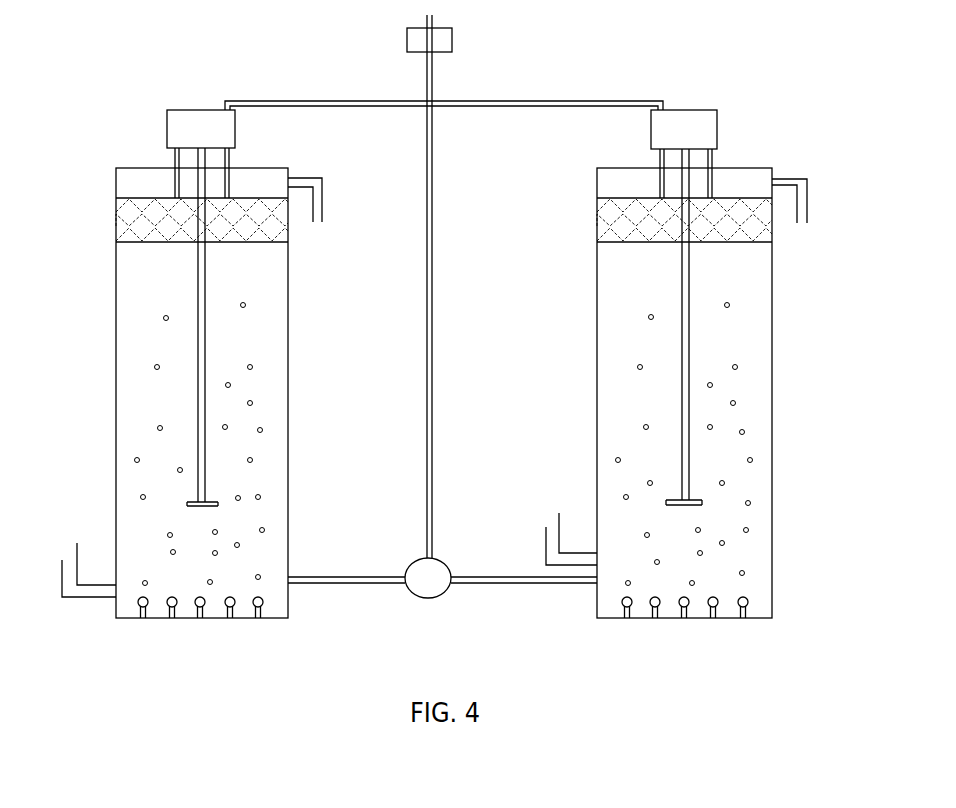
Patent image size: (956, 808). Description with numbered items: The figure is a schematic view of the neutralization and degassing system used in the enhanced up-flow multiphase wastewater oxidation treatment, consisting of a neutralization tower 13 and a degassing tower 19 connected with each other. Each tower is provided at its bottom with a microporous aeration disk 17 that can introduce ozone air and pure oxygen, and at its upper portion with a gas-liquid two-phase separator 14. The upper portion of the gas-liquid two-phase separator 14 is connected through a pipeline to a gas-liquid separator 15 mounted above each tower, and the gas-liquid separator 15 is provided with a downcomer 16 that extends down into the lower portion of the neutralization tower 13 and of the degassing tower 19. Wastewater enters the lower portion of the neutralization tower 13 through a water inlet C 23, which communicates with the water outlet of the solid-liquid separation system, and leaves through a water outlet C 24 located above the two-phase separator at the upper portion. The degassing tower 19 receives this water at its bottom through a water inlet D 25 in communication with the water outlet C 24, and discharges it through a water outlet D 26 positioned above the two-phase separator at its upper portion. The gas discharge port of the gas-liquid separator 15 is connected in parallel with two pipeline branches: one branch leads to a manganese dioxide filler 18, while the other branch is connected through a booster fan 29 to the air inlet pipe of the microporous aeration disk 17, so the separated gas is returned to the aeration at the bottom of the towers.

The neutralization tower 13 is at (115, 320).
The gas-liquid two-phase separator 14 is at (115, 197).
The gas-liquid separator 15 is at (166, 109).
The downcomer 16 is at (205, 254).
The microporous aeration disk 17 is at (263, 618).
The manganese dioxide filler 18 is at (453, 42).
The degassing tower 19 is at (772, 358).
The water inlet C 23 is at (72, 593).
The water outlet C 24 is at (317, 180).
The water inlet D 25 is at (547, 552).
The water outlet D 26 is at (800, 177).
The booster fan 29 is at (442, 595).